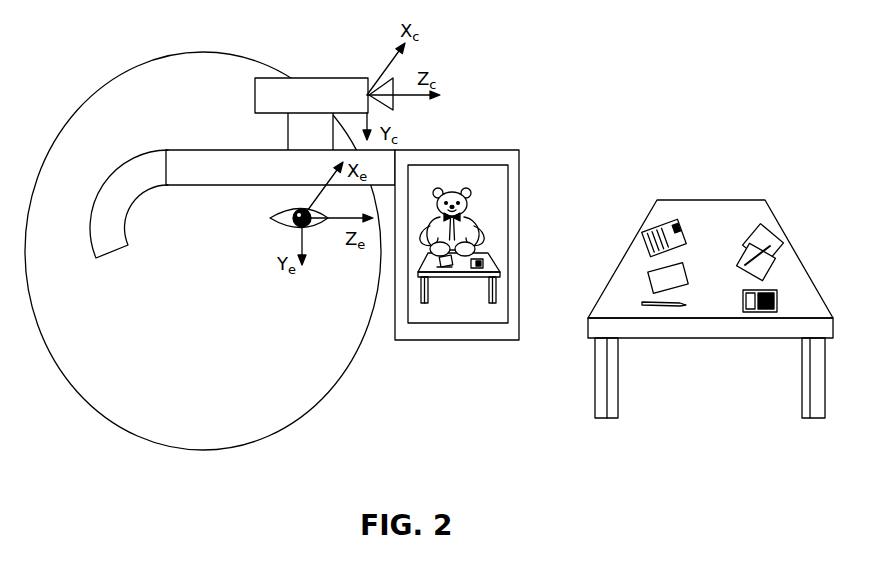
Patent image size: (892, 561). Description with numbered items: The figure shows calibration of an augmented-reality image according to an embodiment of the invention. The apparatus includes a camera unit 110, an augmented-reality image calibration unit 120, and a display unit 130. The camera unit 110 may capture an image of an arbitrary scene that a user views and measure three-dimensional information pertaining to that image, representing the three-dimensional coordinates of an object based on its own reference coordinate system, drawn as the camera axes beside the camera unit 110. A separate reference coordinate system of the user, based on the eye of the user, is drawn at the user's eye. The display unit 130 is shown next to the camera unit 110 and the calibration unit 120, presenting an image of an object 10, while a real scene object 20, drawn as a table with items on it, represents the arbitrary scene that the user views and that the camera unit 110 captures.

The virtual object (teddy bear image) 10 is at (462, 188).
The real object (table) 20 is at (712, 200).
The camera unit 110 is at (312, 78).
The augmented-reality image calibration unit 120 is at (200, 150).
The display unit 130 is at (520, 150).